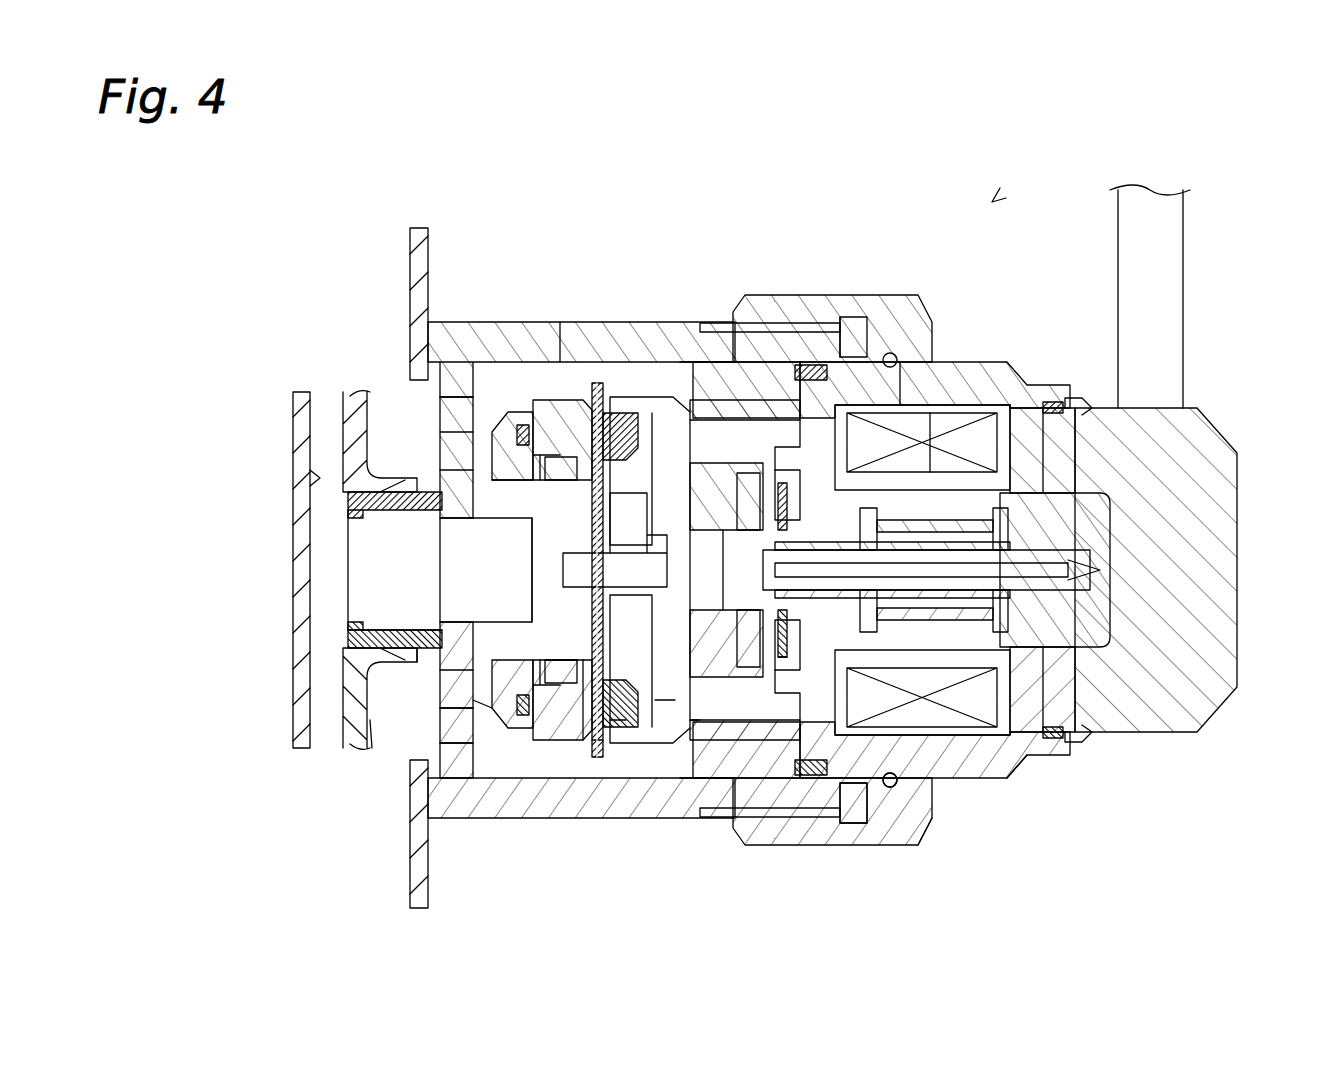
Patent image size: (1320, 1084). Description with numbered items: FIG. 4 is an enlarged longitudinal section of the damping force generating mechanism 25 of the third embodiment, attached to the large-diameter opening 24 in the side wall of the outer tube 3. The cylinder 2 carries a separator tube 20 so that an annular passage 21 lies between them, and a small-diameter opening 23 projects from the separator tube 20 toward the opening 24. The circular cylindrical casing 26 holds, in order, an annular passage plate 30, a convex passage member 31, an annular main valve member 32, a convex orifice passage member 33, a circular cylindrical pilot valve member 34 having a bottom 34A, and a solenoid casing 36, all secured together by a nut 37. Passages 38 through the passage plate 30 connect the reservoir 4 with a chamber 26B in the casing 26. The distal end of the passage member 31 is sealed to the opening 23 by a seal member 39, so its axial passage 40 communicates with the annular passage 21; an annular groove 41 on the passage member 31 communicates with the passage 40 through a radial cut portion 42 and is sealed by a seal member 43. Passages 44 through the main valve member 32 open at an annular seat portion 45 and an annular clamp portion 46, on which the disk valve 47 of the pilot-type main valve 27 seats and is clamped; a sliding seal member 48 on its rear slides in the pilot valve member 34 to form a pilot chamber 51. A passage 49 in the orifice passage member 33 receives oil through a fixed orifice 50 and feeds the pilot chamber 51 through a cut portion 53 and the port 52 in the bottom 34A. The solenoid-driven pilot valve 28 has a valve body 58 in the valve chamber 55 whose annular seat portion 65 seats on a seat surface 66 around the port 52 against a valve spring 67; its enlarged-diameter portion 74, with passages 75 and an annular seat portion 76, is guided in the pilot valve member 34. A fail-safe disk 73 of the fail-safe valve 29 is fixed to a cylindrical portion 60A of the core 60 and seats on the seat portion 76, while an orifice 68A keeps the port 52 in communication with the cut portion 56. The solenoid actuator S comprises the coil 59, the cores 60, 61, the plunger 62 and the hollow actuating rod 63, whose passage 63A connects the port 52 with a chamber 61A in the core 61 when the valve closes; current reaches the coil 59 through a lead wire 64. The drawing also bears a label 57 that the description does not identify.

The cylinder 2 is at (300, 420).
The annular passage 21 is at (325, 478).
The outer tube 3 is at (412, 258).
The separator tube 20 is at (352, 402).
The reservoir 4 is at (398, 738).
The annular passage plate 30 is at (432, 768).
The small-diameter opening 23 is at (370, 628).
The seal member 39 is at (374, 648).
The passage 40 is at (368, 548).
The fixed orifice 50 is at (556, 565).
The large-diameter opening 24 is at (452, 338).
The passages 38 is at (462, 400).
The convex passage member 31 is at (458, 745).
The passages 44 is at (468, 700).
The annular main valve member 32 is at (488, 722).
The circular cylindrical casing 26 is at (578, 340).
The chamber 26B is at (440, 790).
The radial cut portion 42 is at (497, 450).
The annular groove 41 is at (545, 430).
The seal member 43 is at (505, 420).
The annular clamp portion 46 is at (522, 700).
The annular seat portion 45 is at (555, 680).
The pilot chamber 51 is at (583, 700).
The convex orifice passage member 33 is at (598, 745).
The cut portion 53 is at (620, 730).
The main valve 27 is at (598, 385).
The disk valve 47 is at (607, 420).
The annular sliding seal member 48 is at (628, 438).
The passage 49 is at (650, 400).
The annular seat portion 65 is at (688, 400).
The seat surface 66 is at (700, 700).
The valve spring 67 is at (690, 760).
The valve body 58 is at (735, 395).
The valve chamber 55 is at (735, 690).
The enlarged-diameter portion 74 is at (790, 400).
The passages 75 is at (770, 740).
The pilot valve member 34 is at (790, 700).
The bottom 34A is at (660, 700).
The pilot valve 28 is at (745, 350).
The ball 57 is at (845, 330).
The nut 37 is at (925, 830).
The port 52 is at (890, 790).
The orifice 68A is at (850, 800).
The cut portion 56 is at (860, 350).
The solenoid casing 36 is at (975, 762).
The annular seat portion 76 is at (820, 365).
The fail-safe disk 73 is at (900, 365).
The fail-safe valve 29 is at (810, 372).
The core 60 is at (950, 430).
The coil 59 is at (1000, 400).
The circular cylindrical portion 60A is at (935, 415).
The solenoid actuator S is at (1020, 408).
The core 61 is at (1062, 400).
The plunger 62 is at (1055, 742).
The hollow actuating rod 63 is at (1235, 452).
The passage 63A is at (1100, 572).
The chamber 61A is at (1090, 600).
The lead wire 64 is at (1185, 306).
The damping force generating mechanism 25 is at (992, 202).